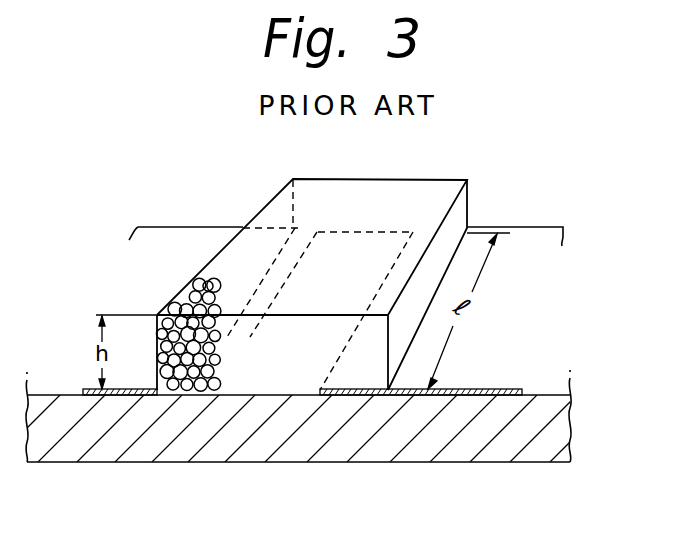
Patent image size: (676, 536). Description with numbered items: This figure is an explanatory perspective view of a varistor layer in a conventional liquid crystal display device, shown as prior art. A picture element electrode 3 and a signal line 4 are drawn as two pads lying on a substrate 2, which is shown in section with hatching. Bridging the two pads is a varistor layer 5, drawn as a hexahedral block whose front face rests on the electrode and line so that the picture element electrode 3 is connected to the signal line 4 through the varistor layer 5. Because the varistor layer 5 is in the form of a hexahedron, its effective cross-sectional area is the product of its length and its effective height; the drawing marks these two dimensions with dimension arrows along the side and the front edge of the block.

The substrate 2 is at (254, 448).
The picture element electrode 3 is at (373, 395).
The signal line 4 is at (108, 395).
The varistor layer 5 is at (398, 188).